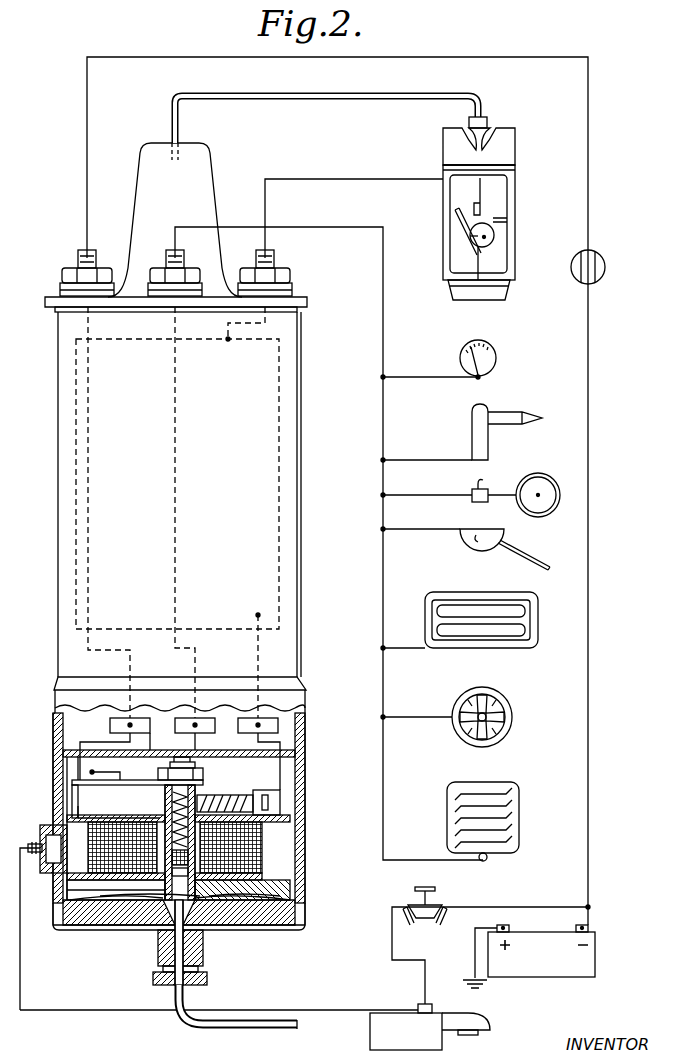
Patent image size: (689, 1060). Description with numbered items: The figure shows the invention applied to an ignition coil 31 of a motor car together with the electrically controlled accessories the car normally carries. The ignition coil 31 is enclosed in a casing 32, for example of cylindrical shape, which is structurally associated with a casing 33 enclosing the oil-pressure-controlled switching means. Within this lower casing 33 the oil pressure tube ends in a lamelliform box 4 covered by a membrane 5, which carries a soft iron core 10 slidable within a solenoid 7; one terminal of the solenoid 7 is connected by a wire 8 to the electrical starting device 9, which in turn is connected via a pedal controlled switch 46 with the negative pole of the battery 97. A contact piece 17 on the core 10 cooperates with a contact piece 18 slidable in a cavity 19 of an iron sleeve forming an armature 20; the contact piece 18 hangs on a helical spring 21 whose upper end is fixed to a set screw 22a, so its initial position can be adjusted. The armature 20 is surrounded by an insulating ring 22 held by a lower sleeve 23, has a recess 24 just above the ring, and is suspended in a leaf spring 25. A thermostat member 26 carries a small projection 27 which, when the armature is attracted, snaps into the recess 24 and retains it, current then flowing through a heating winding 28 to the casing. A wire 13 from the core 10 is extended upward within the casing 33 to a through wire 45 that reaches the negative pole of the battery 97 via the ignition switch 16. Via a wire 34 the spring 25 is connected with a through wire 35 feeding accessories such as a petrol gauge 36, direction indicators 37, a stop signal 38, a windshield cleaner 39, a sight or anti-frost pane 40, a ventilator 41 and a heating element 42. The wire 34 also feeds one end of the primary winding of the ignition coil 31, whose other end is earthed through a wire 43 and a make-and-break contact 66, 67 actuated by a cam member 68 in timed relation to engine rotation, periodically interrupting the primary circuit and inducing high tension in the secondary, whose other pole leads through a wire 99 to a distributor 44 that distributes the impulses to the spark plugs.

The lamelliform box 4 is at (96, 922).
The membrane 5 is at (136, 912).
The solenoid 7 is at (105, 832).
The wire 8 is at (343, 1010).
The electrical starting device 9 is at (370, 1031).
The soft iron core 10 is at (230, 906).
The wire 13 is at (60, 893).
The ignition switch 16 is at (576, 258).
The contact piece 17 is at (170, 852).
The contact piece 18 is at (236, 858).
The cavity 19 is at (236, 844).
The armature 20 is at (150, 780).
The helical spring 21 is at (240, 832).
The insulating ring 22 is at (160, 806).
The set screw 22a is at (214, 765).
The lower sleeve 23 is at (175, 842).
The recess 24 is at (205, 790).
The leaf spring 25 is at (100, 785).
The thermostat member 26 is at (266, 798).
The projection 27 is at (210, 806).
The heating winding 28 is at (250, 800).
The ignition coil 31 is at (262, 532).
The casing 32 is at (300, 366).
The casing 33 is at (305, 736).
The wire 34 is at (175, 750).
The through wire 35 is at (174, 387).
The petrol gauge 36 is at (495, 352).
The direction indicators 37 is at (514, 423).
The stop signal 38 is at (540, 472).
The windshield cleaner 39 is at (506, 535).
The sight or anti-frost pane 40 is at (538, 630).
The ventilator 41 is at (512, 718).
The heating element 42 is at (519, 848).
The wire 43 is at (398, 178).
The distributor 44 is at (515, 178).
The through wire 45 is at (88, 563).
The pedal controlled switch 46 is at (438, 910).
The make-and-break contact 66 is at (472, 208).
The make-and-break contact 67 is at (452, 213).
The cam member 68 is at (495, 232).
The battery 97 is at (547, 936).
The wire 99 is at (403, 101).